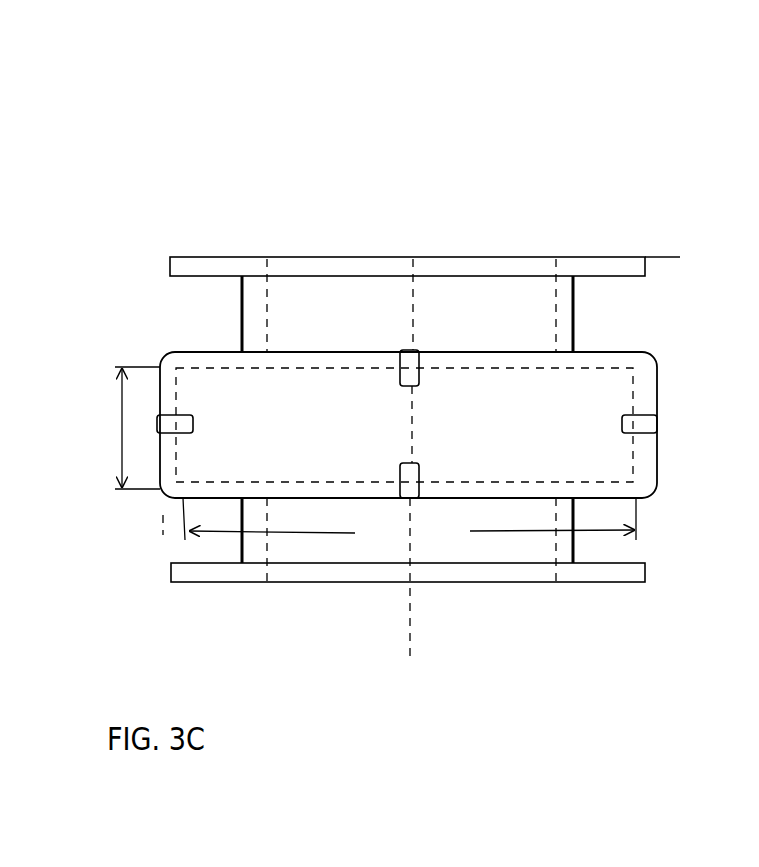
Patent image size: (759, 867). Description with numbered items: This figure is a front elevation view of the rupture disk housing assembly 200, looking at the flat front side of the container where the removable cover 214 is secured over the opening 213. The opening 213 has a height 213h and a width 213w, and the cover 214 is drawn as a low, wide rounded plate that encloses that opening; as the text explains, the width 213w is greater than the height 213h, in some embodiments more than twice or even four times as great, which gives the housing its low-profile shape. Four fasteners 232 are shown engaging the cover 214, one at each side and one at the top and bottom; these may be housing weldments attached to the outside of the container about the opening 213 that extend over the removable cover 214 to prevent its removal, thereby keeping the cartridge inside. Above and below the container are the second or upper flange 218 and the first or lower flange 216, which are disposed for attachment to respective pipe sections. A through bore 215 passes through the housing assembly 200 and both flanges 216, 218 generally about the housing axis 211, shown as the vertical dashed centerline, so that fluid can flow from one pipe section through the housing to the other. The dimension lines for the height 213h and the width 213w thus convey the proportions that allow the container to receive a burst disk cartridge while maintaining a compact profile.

The housing assembly 200 is at (669, 204).
The housing axis 211 is at (408, 650).
The opening 213 is at (393, 393).
The height 213h is at (130, 428).
The width 213w is at (399, 523).
The removable cover 214 is at (160, 361).
The through bore 215 is at (545, 295).
The first flange 216 is at (619, 584).
The second flange 218 is at (219, 257).
The fasteners 232 is at (410, 350).